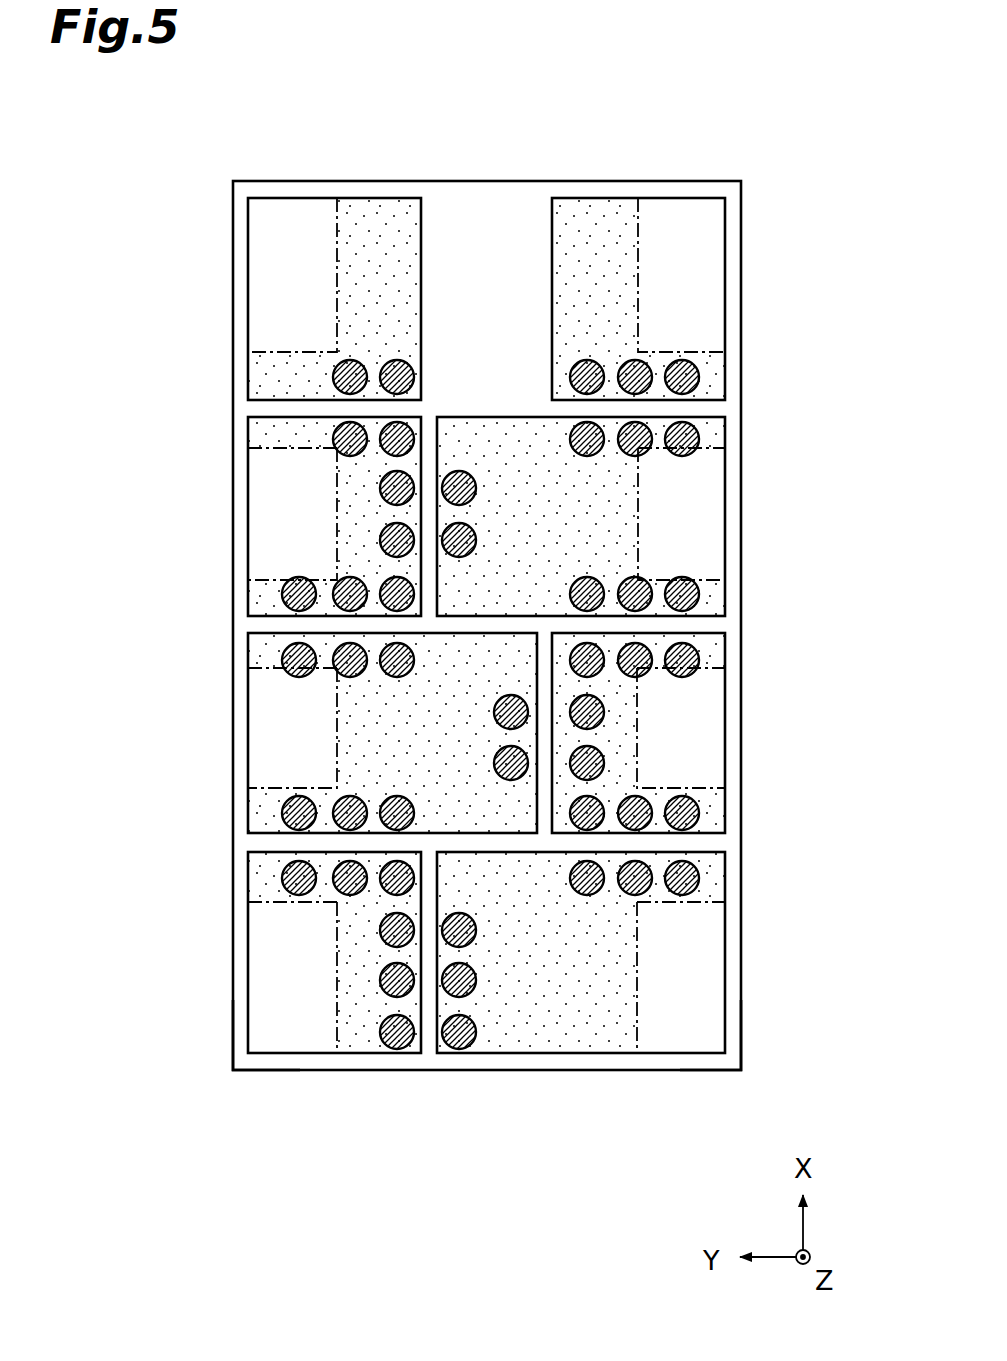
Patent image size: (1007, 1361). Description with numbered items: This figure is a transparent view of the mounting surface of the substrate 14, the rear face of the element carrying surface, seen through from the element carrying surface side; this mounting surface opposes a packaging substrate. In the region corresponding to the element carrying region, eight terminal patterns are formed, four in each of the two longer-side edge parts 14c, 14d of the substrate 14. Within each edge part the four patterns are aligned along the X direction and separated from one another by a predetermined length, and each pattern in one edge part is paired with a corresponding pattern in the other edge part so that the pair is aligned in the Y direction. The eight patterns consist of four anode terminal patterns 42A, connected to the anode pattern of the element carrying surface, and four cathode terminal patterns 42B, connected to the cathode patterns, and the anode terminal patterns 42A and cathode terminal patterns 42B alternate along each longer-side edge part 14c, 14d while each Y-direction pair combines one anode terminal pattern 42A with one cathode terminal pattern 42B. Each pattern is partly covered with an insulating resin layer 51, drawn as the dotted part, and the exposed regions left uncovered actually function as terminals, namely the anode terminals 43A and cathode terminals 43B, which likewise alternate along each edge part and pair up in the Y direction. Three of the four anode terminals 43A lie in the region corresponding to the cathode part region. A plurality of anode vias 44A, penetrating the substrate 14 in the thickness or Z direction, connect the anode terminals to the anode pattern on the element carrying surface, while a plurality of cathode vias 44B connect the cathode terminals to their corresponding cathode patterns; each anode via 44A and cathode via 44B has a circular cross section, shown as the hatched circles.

The substrate 14 is at (792, 188).
The longer-side edge part 14c is at (743, 1028).
The longer-side edge part 14d is at (230, 1028).
The anode terminal pattern 42A is at (729, 228).
The cathode terminal pattern 42B is at (245, 250).
The anode terminal 43A is at (705, 248).
The cathode terminal 43B is at (262, 282).
The anode via 44A is at (685, 358).
The cathode via 44B is at (392, 362).
The insulating resin layer 51 is at (543, 427).